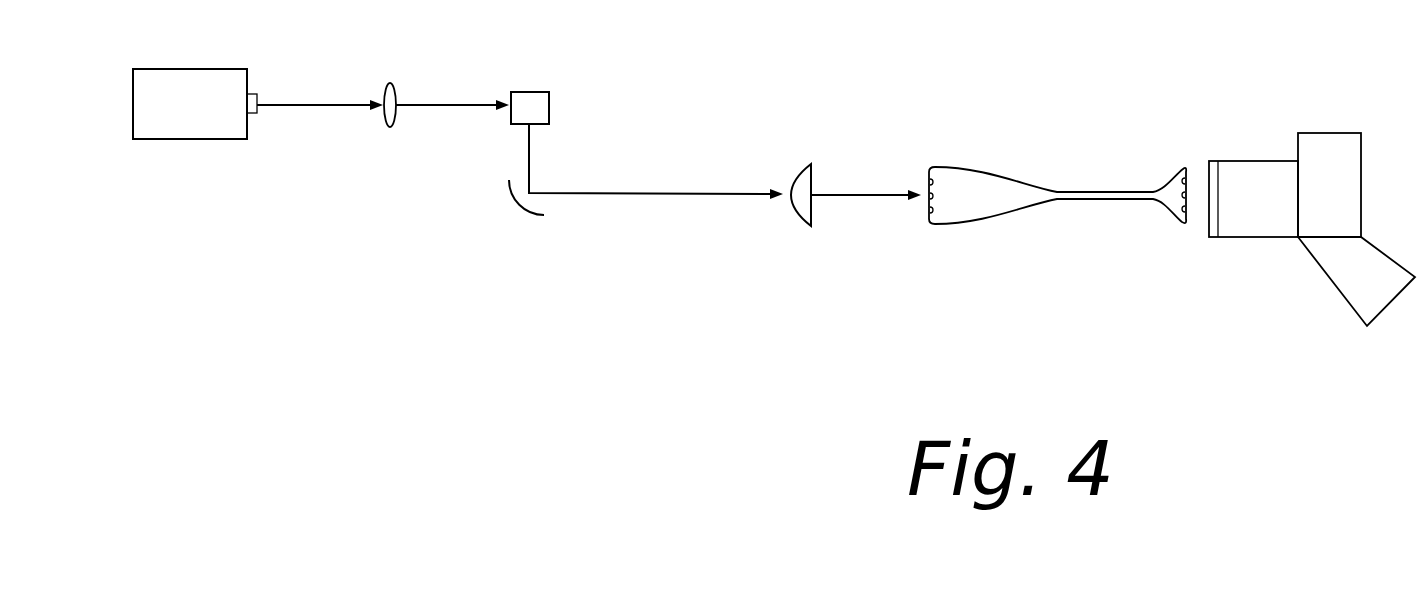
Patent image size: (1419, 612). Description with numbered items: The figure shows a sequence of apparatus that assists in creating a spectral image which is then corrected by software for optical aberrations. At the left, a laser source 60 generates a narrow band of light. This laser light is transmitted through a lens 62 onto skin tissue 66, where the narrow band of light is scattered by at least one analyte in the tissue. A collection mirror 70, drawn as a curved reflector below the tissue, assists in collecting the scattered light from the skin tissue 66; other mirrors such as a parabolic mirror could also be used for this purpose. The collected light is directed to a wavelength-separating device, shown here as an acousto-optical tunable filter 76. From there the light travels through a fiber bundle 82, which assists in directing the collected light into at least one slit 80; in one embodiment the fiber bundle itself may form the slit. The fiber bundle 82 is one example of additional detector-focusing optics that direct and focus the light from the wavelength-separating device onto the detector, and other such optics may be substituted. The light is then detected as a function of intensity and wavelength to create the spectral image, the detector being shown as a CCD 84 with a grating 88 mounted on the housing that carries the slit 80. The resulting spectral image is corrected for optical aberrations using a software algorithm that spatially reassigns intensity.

The laser source 60 is at (155, 139).
The lens 62 is at (388, 127).
The skin tissue 66 is at (518, 92).
The collection mirror 70 is at (505, 226).
The acousto-optical tunable filter 76 is at (800, 165).
The fiber bundle 82 is at (1029, 206).
The slit 80 is at (1210, 237).
The grating 88 is at (1316, 133).
The CCD 84 is at (1377, 326).